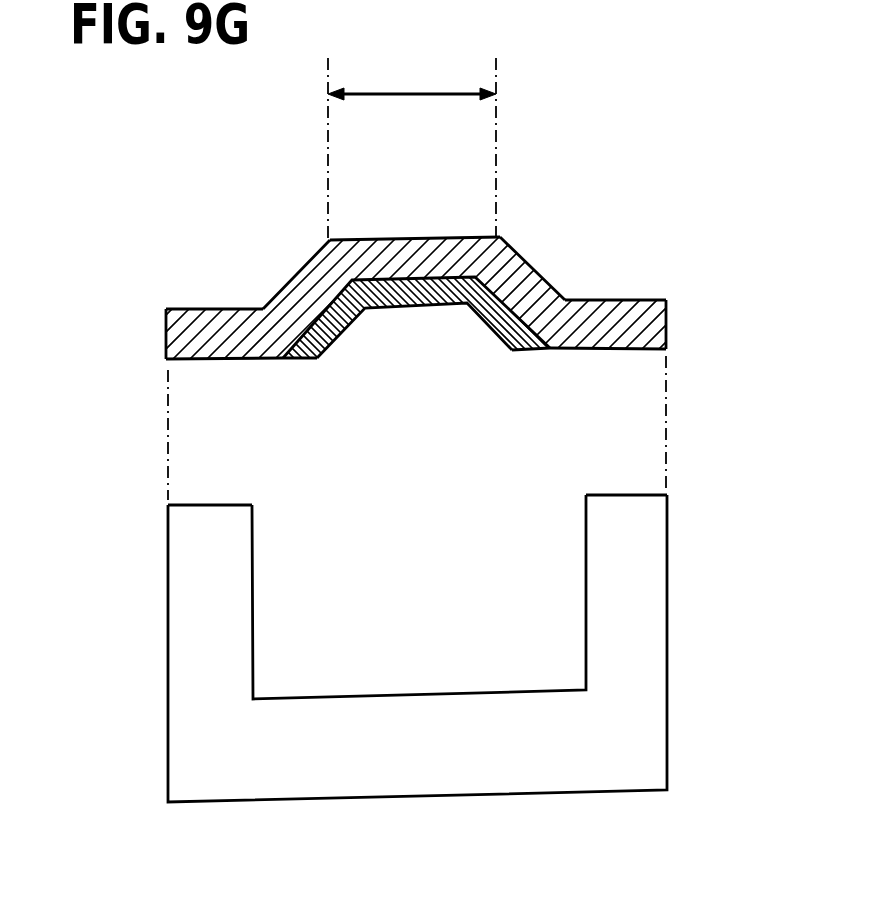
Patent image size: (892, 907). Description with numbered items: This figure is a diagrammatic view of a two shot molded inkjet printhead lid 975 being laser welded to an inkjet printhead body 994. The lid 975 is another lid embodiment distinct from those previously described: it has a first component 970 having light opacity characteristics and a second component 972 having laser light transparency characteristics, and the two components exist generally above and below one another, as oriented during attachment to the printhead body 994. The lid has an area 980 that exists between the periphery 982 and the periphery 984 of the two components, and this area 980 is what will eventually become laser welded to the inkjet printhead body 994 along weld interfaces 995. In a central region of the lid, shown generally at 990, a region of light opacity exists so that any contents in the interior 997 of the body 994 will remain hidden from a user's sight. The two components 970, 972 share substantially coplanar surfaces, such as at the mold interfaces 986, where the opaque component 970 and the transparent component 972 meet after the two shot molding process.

The inkjet printhead lid 975 is at (597, 162).
The area 980 is at (205, 309).
The periphery 982 is at (166, 342).
The periphery 984 is at (283, 360).
The mold interfaces 986 is at (318, 312).
The second component 972 is at (410, 238).
The first component 970 is at (508, 335).
The central region 990 is at (413, 92).
The inkjet printhead body 994 is at (667, 575).
The weld interfaces 995 is at (203, 505).
The interior 997 is at (438, 600).